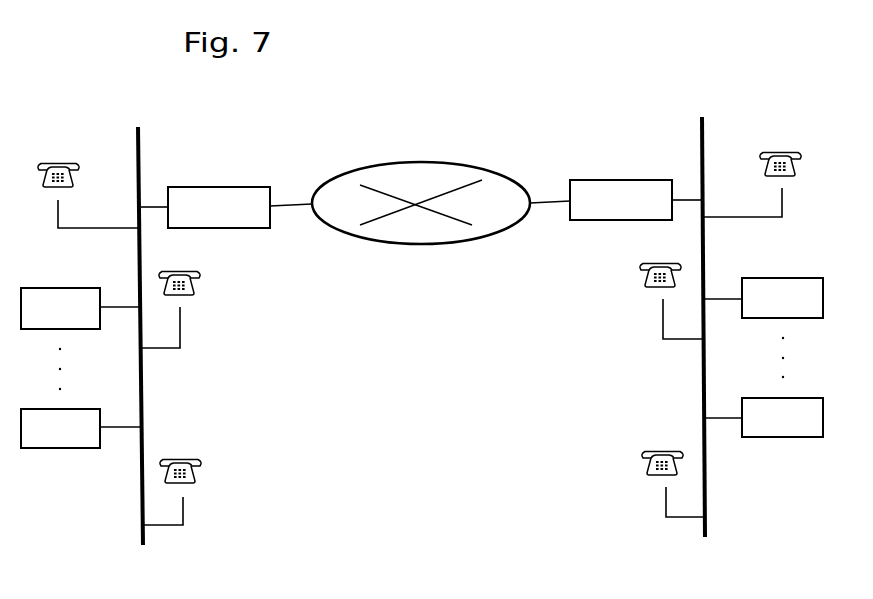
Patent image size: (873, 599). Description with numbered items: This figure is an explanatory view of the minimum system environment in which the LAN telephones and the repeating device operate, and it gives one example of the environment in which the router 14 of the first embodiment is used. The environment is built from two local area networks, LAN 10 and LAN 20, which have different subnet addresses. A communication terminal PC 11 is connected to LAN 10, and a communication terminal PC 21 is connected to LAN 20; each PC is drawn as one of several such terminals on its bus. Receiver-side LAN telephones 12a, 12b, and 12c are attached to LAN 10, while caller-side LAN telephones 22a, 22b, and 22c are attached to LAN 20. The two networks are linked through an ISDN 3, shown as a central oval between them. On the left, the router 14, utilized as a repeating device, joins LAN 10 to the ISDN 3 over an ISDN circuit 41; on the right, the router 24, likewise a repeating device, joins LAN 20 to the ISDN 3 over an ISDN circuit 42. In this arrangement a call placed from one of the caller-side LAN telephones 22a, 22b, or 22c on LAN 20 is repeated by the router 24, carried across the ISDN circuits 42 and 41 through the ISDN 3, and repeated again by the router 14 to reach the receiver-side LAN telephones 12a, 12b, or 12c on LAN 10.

The ISDN 3 is at (421, 244).
The LAN 10 is at (142, 528).
The communication terminal PC 11 is at (33, 288).
The receiver-side LAN telephone 12a is at (88, 167).
The receiver-side LAN telephone 12b is at (200, 295).
The receiver-side LAN telephone 12c is at (212, 465).
The router 14 is at (205, 187).
The LAN 20 is at (708, 523).
The communication terminal PC 21 is at (800, 278).
The caller-side LAN telephone 22a is at (810, 158).
The caller-side LAN telephone 22b is at (643, 290).
The caller-side LAN telephone 22c is at (633, 468).
The router 24 is at (618, 180).
The ISDN circuit 41 is at (294, 200).
The ISDN circuit 42 is at (545, 200).